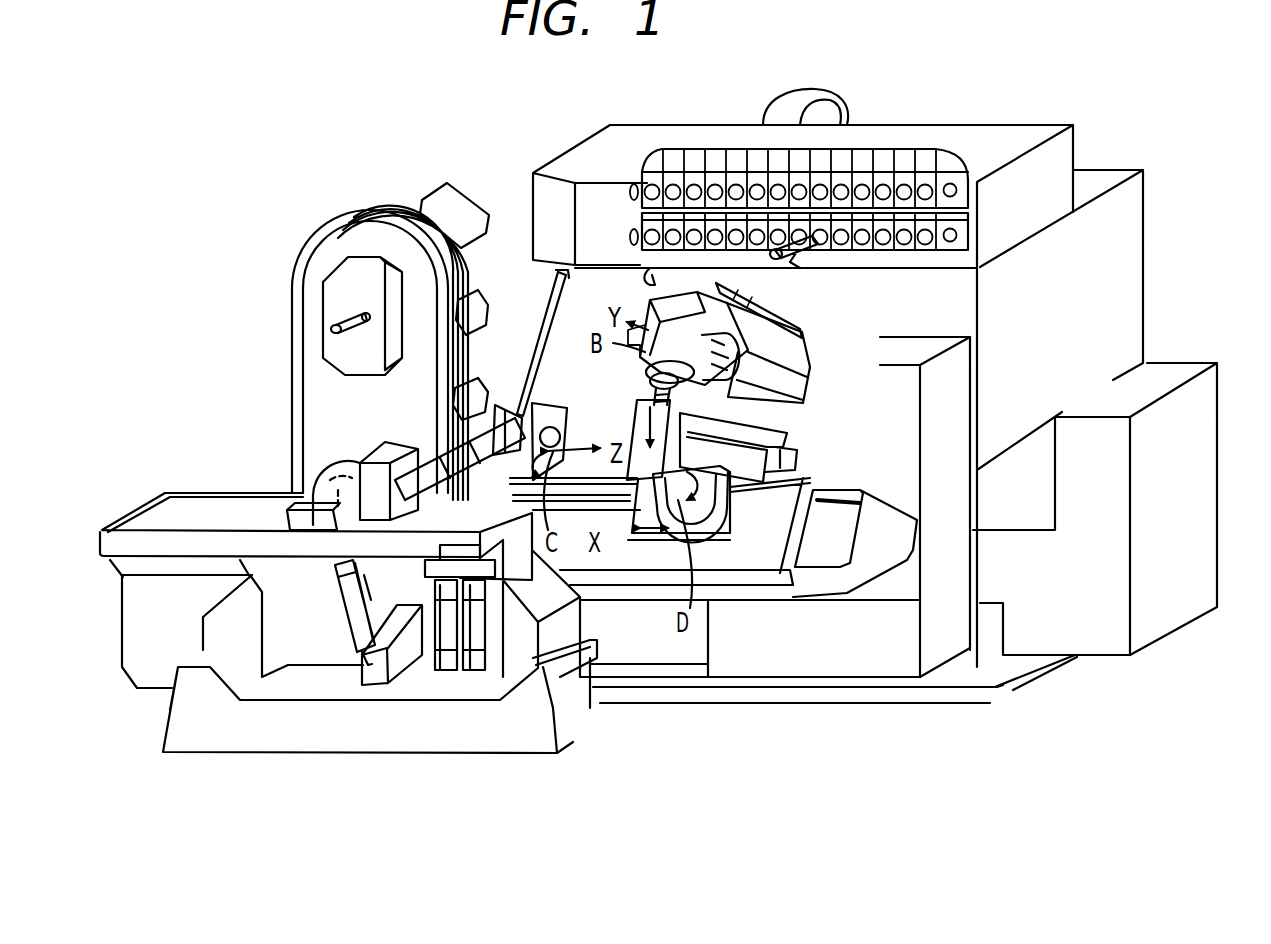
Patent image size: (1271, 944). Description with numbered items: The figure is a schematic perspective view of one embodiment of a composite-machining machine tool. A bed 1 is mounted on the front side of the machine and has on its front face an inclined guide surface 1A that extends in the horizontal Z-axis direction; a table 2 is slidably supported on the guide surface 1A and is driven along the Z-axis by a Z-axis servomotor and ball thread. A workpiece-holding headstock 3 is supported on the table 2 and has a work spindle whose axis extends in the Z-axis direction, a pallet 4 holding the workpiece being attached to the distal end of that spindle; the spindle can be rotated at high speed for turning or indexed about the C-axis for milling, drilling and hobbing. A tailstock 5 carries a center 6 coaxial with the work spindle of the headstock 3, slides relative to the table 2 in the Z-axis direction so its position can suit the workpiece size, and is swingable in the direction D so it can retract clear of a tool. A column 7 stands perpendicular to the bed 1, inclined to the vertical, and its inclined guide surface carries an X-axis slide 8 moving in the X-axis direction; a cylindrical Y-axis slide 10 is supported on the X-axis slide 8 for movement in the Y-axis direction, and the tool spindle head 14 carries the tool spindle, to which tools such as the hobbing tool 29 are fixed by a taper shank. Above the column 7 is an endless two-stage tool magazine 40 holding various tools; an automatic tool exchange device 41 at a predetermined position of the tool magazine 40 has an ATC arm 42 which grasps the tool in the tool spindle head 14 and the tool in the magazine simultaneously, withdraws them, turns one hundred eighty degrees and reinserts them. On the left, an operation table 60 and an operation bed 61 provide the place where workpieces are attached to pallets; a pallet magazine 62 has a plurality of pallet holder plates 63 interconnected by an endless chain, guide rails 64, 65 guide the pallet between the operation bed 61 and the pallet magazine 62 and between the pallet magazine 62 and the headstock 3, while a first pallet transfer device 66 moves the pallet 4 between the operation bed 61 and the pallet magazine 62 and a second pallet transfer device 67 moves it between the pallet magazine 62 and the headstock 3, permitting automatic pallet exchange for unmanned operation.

The bed 1 is at (798, 598).
The guide surface 1A is at (827, 570).
The table 2 is at (737, 568).
The workpiece-holding headstock 3 is at (522, 366).
The pallet 4 is at (450, 187).
The tailstock 5 is at (750, 470).
The center 6 is at (790, 427).
The column 7 is at (753, 291).
The X-axis slide 8 is at (779, 339).
The Y-axis slide 10 is at (806, 340).
The tool spindle head 14 is at (668, 323).
The hobbing tool 29 is at (648, 388).
The tool magazine 40 is at (936, 142).
The automatic tool exchange device 41 is at (792, 281).
The ATC arm 42 is at (650, 273).
The operation table 60 is at (141, 523).
The operation bed 61 is at (331, 455).
The pallet magazine 62 is at (336, 212).
The pallet holder plates 63 is at (462, 308).
The guide rail 64 is at (438, 460).
The guide rail 65 is at (517, 413).
The first pallet transfer device 66 is at (427, 637).
The second pallet transfer device 67 is at (524, 345).